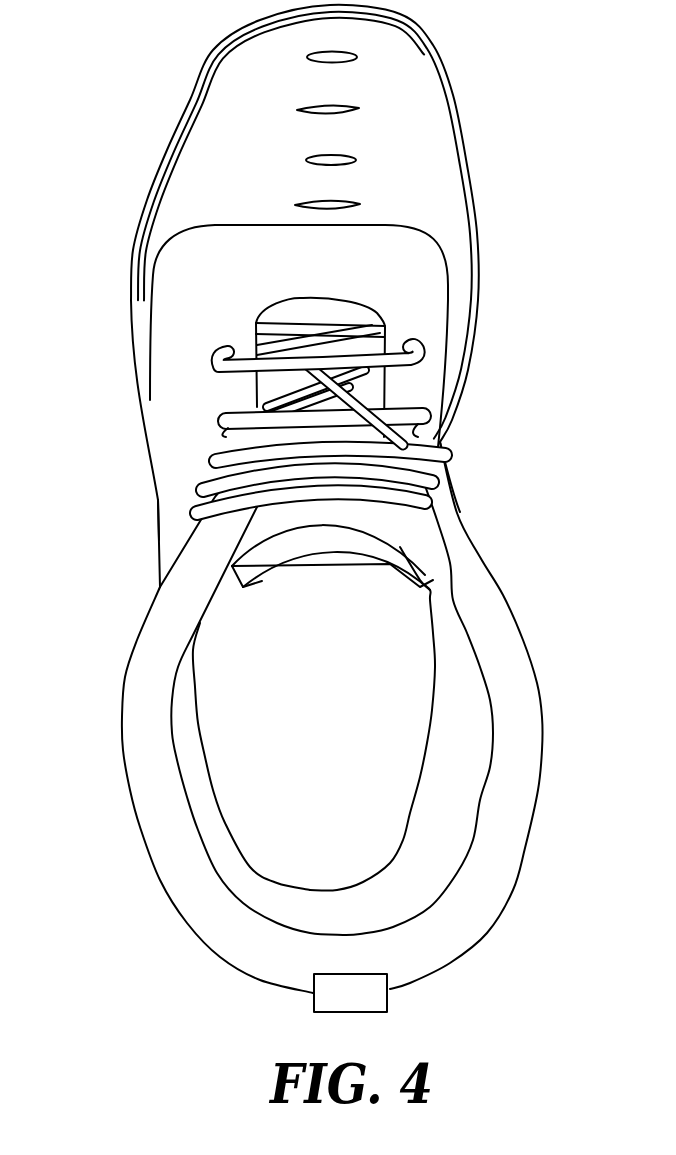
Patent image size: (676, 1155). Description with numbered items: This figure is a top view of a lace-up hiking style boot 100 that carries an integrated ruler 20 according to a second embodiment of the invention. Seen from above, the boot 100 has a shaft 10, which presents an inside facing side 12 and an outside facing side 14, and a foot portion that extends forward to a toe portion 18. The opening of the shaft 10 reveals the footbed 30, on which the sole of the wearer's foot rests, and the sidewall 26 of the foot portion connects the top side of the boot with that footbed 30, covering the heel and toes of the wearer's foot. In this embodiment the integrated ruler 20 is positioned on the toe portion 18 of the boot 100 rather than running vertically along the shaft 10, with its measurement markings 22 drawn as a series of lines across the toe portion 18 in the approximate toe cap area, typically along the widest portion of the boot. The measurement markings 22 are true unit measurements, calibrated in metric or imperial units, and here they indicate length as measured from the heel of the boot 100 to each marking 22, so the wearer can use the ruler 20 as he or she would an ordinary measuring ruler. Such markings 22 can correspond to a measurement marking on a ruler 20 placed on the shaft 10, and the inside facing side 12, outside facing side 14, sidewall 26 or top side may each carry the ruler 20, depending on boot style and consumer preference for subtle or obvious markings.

The boot 100 is at (220, 60).
The shaft 10 is at (160, 585).
The inside facing side of shaft 12 is at (462, 505).
The outside facing side of shaft 14 is at (156, 514).
The toe portion 18 is at (219, 110).
The ruler 20 is at (283, 60).
The measurement marking 22 is at (348, 54).
The sidewall 26 is at (134, 339).
The footbed 30 is at (140, 222).